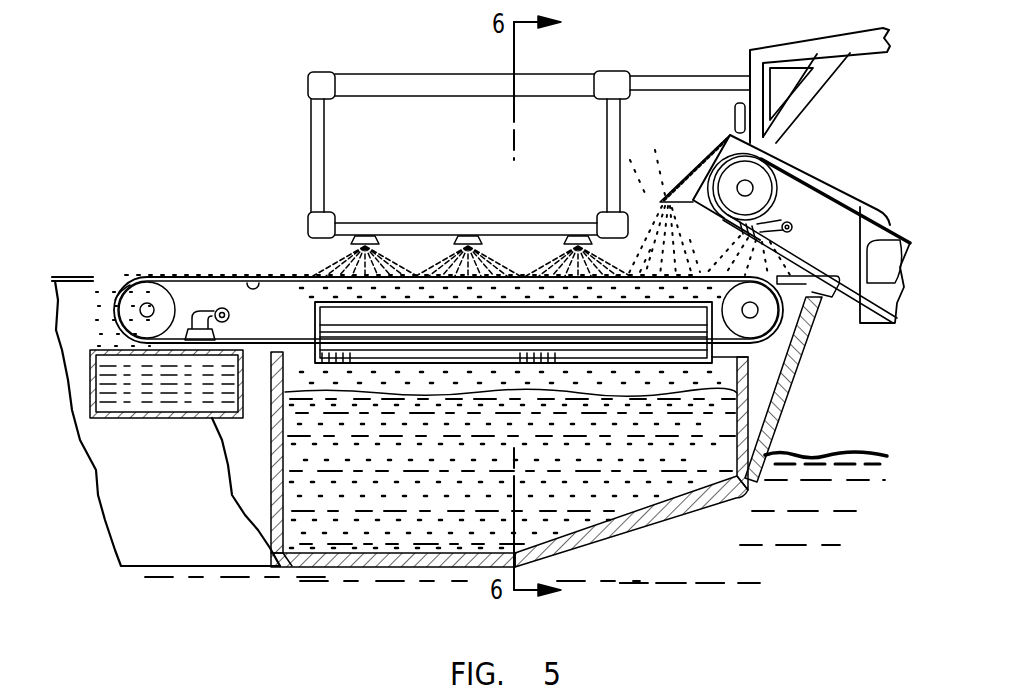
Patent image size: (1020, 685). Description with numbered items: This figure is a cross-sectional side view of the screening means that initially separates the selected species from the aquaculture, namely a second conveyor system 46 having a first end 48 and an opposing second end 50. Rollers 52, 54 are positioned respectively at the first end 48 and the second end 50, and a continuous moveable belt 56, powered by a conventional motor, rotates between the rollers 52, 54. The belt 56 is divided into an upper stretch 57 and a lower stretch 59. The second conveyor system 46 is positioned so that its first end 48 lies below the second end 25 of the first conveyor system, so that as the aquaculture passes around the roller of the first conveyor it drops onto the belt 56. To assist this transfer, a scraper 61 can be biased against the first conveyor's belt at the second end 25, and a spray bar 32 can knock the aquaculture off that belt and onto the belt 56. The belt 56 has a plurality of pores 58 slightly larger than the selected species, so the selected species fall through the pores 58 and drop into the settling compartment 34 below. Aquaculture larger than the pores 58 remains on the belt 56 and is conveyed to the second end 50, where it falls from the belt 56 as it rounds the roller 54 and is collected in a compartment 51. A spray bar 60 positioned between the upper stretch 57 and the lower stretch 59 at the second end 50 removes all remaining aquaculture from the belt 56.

The second end 25 is at (752, 175).
The spray bar 32 is at (778, 217).
The settling compartment 34 is at (740, 423).
The second conveyor system 46 is at (461, 256).
The first end 48 is at (762, 330).
The second end 50 is at (138, 288).
The compartment 51 is at (137, 421).
The roller 52 is at (768, 300).
The roller 54 is at (118, 296).
The continuous moveable belt 56 is at (777, 396).
The upper stretch 57 is at (293, 277).
The pores 58 is at (253, 283).
The lower stretch 59 is at (260, 345).
The spray bar 60 is at (195, 306).
The scraper 61 is at (698, 170).